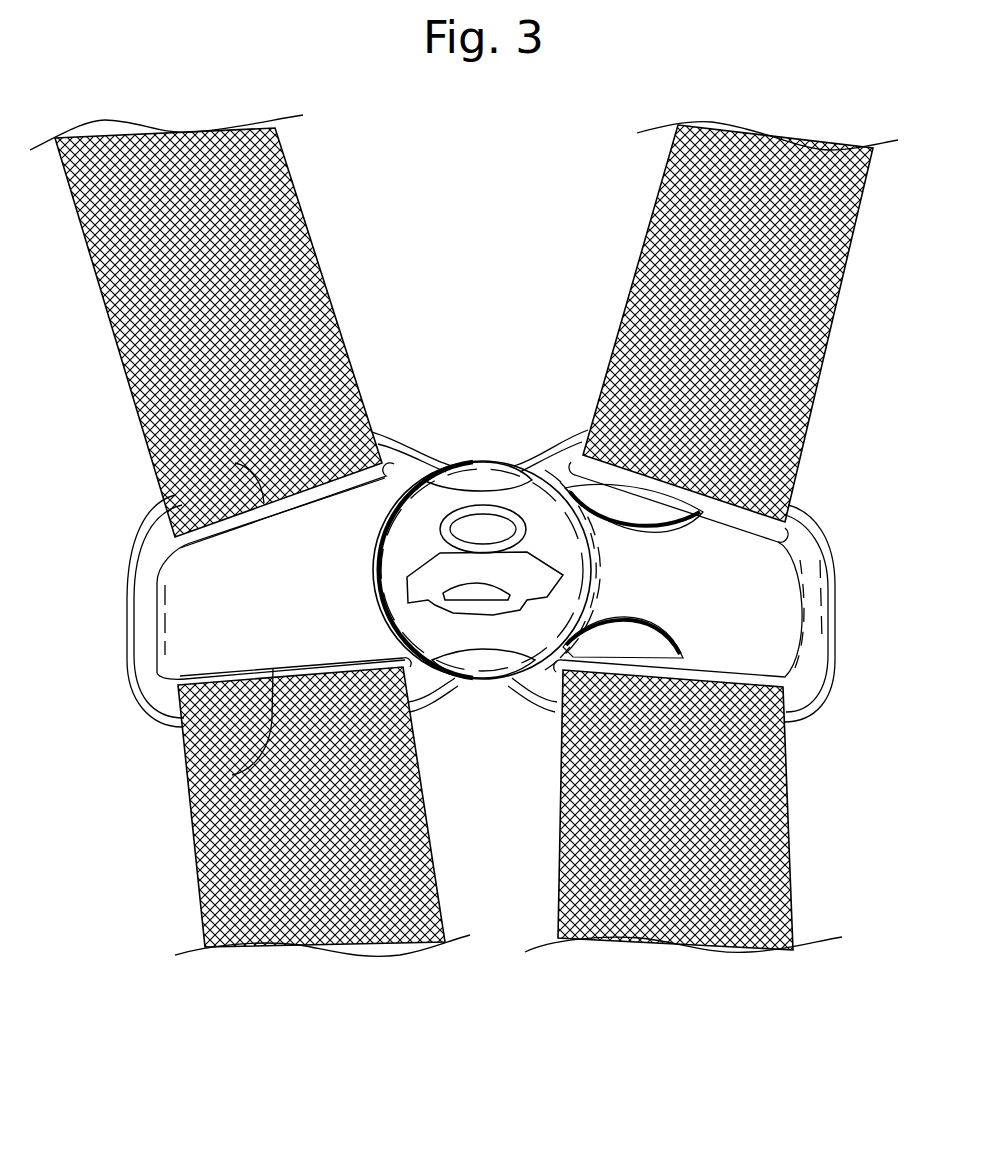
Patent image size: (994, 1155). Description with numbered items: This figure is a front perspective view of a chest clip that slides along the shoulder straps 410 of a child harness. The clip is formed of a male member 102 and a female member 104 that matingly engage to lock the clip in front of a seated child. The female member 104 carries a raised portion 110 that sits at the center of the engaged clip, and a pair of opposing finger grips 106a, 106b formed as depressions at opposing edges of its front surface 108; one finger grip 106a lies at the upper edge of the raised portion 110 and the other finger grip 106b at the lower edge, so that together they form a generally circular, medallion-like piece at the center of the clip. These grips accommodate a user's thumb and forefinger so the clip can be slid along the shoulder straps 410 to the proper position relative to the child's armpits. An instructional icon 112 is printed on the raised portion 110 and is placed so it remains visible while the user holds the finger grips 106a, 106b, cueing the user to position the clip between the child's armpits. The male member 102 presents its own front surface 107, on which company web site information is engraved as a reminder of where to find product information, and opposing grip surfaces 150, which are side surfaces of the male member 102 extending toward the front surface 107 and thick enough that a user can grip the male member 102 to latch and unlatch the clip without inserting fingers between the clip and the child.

The male member 102 is at (175, 598).
The female member 104 is at (790, 597).
The finger grip 106a is at (481, 480).
The finger grip 106b is at (478, 663).
The front surface of the male member 107 is at (247, 596).
The front surface 108 is at (432, 546).
The raised portion 110 is at (424, 485).
The instructional icon 112 is at (415, 577).
The grip surfaces 150 is at (235, 463).
The shoulder straps 410 is at (135, 364).